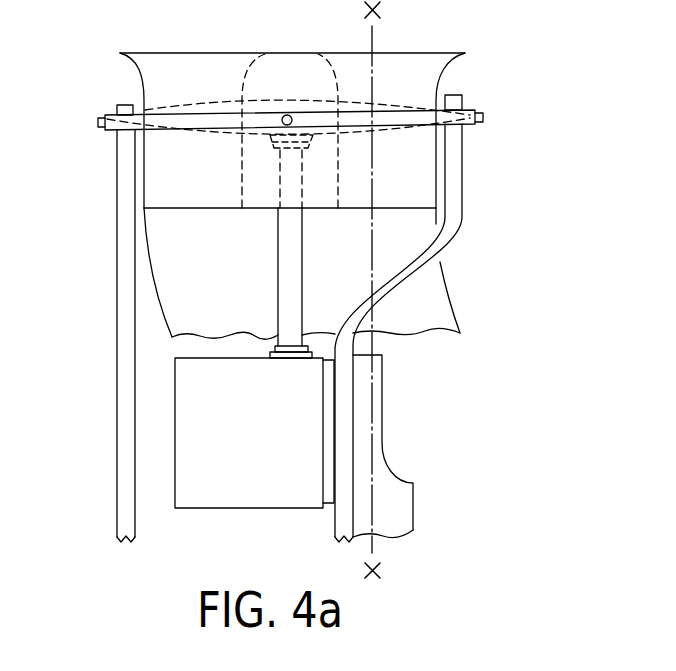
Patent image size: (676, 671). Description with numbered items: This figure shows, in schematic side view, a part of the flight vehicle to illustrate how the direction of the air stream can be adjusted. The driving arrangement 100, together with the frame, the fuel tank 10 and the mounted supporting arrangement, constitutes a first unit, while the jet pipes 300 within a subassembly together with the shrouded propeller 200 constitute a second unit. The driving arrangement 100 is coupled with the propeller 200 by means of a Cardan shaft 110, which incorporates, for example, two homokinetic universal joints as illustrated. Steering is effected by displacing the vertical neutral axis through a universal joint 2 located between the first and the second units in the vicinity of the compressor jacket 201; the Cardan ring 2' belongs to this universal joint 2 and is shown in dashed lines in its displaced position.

The universal joint 2 is at (250, 137).
The Cardan ring 2' is at (288, 147).
The fuel tank 10 is at (403, 497).
The driving arrangement 100 is at (238, 496).
The Cardan shaft 110 is at (275, 278).
The shrouded propeller 200 is at (240, 87).
The compressor jacket 201 is at (417, 173).
The jet pipes 300 is at (437, 308).